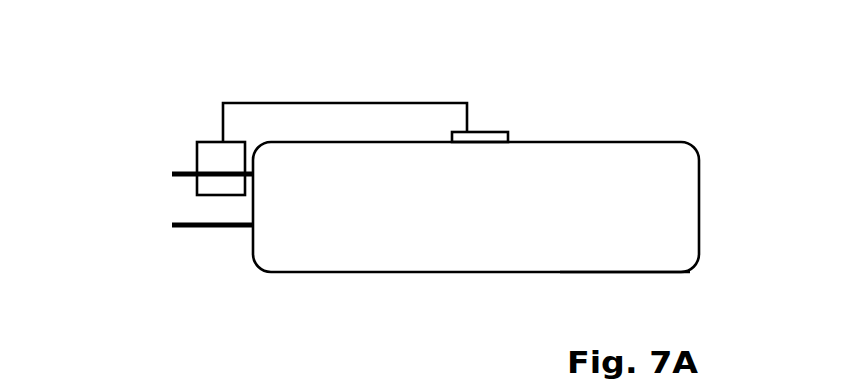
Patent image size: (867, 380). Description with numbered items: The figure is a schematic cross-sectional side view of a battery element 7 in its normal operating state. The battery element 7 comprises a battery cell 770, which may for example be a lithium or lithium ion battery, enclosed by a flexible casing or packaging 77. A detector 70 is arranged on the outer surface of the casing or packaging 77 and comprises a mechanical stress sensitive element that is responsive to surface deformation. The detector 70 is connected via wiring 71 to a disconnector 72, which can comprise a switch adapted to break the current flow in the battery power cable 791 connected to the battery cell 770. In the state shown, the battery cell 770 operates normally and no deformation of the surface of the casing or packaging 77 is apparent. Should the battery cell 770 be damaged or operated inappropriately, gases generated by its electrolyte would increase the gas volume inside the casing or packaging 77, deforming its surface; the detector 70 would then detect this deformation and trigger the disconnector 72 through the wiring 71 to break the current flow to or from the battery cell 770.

The battery element 7 is at (668, 87).
The detector 70 is at (493, 132).
The wiring 71 is at (353, 103).
The disconnector 72 is at (215, 139).
The flexible casing or packaging 77 is at (623, 272).
The battery cell 770 is at (474, 222).
The battery power cable 791 is at (172, 174).